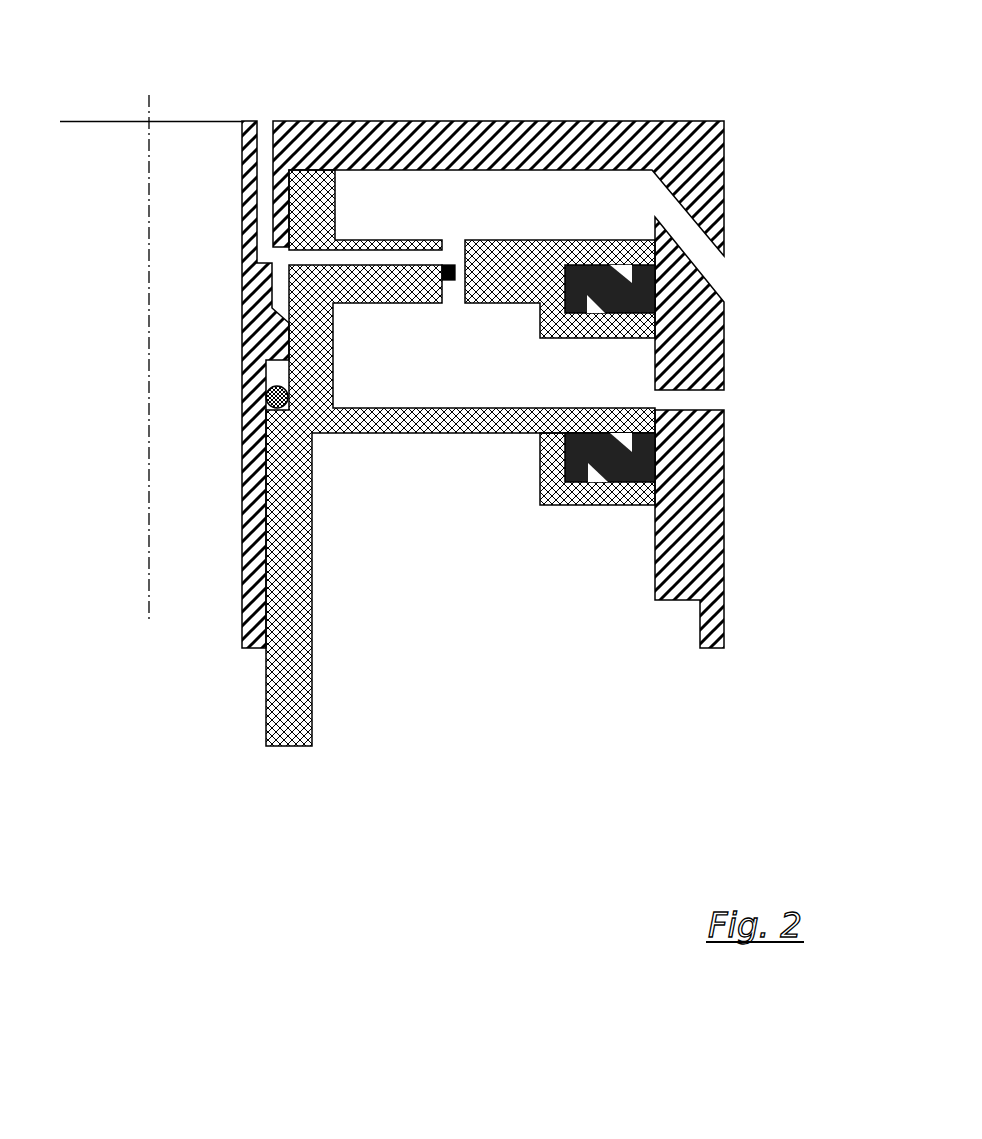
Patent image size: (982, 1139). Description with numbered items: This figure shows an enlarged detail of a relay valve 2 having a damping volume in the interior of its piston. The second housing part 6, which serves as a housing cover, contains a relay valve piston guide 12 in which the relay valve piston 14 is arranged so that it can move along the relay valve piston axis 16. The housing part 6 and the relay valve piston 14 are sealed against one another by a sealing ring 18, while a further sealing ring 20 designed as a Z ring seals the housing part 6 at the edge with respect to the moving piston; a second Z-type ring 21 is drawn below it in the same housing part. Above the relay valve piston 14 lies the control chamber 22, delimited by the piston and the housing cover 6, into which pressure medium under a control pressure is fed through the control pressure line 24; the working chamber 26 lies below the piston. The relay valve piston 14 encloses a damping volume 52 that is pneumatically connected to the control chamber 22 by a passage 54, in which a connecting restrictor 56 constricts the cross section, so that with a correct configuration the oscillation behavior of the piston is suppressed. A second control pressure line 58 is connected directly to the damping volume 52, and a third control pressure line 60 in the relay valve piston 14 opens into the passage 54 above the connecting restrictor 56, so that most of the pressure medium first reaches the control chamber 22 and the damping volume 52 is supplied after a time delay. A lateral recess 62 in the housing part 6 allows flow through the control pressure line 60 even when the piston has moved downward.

The relay valve 2 is at (336, 72).
The second housing part 6 is at (503, 128).
The relay valve piston guide 12 is at (240, 633).
The relay valve piston 14 is at (266, 422).
The relay valve piston axis 16 is at (147, 190).
The sealing ring 18 is at (266, 393).
The further sealing ring 20 is at (625, 292).
The second magnet 21 is at (640, 467).
The control chamber 22 is at (553, 218).
The control pressure line 24 is at (712, 268).
The working chamber 26 is at (452, 525).
The damping volume 52 is at (395, 384).
The passage 54 is at (453, 243).
The connecting restrictor 56 is at (452, 281).
The second control pressure line 58 is at (712, 400).
The third control pressure line 60 is at (325, 257).
The lateral recess 62 is at (279, 298).